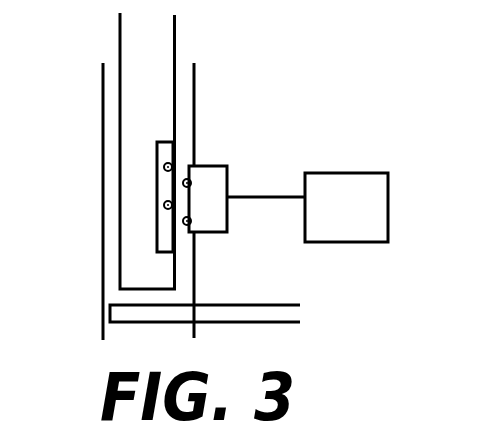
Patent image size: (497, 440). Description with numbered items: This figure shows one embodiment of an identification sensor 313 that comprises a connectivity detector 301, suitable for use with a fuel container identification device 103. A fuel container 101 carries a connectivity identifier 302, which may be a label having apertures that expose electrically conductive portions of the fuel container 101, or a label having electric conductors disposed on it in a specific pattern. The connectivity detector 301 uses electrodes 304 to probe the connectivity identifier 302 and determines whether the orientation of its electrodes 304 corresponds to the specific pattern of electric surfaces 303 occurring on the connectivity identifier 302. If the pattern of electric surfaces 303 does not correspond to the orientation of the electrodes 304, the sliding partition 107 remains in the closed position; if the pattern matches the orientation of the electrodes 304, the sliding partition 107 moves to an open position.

The fuel container 101 is at (135, 53).
The connectivity identifier 302 is at (157, 143).
The electric surfaces 303 is at (180, 167).
The electrodes 304 is at (187, 226).
The connectivity detector 301 is at (228, 178).
The identification sensor 313 is at (330, 95).
The fuel container identification device 103 is at (327, 253).
The sliding partition 107 is at (218, 322).